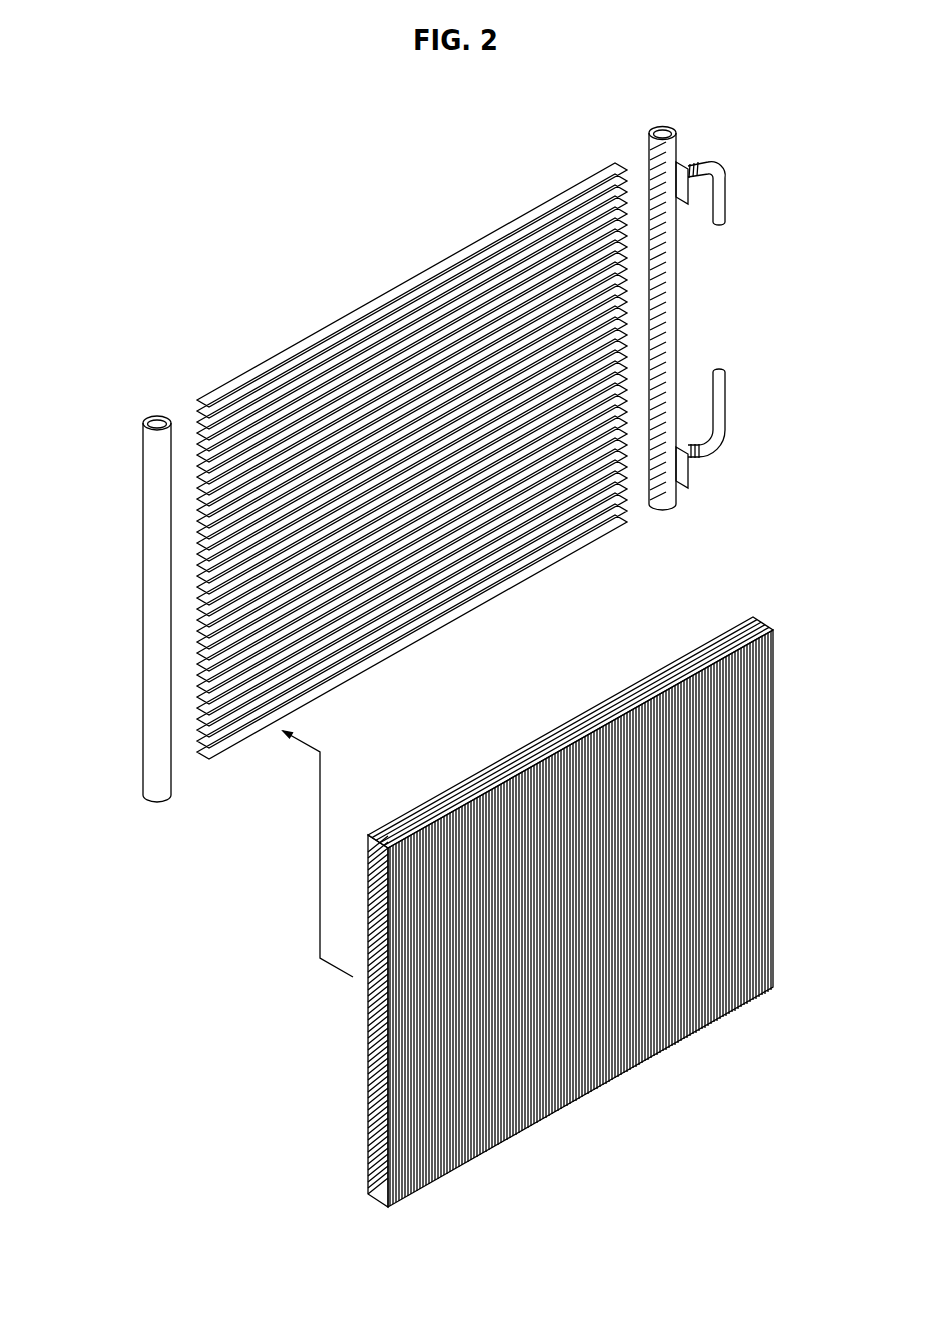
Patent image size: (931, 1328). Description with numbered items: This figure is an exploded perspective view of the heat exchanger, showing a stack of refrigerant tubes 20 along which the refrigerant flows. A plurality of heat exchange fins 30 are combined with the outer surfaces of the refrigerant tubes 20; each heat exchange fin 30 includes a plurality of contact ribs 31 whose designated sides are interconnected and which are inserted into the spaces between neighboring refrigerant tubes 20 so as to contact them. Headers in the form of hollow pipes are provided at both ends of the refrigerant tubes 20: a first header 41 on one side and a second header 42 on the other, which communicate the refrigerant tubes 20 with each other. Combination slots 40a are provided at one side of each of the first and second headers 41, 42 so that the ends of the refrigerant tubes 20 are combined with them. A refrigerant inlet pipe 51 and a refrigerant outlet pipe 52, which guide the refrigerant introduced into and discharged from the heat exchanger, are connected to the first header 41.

The refrigerant tubes 20 is at (385, 300).
The heat exchange fins 30 is at (637, 683).
The contact ribs 31 is at (367, 1052).
The combination slots 40a is at (650, 168).
The first header 41 is at (672, 310).
The second header 42 is at (158, 543).
The refrigerant inlet pipe 51 is at (723, 200).
The refrigerant outlet pipe 52 is at (722, 398).